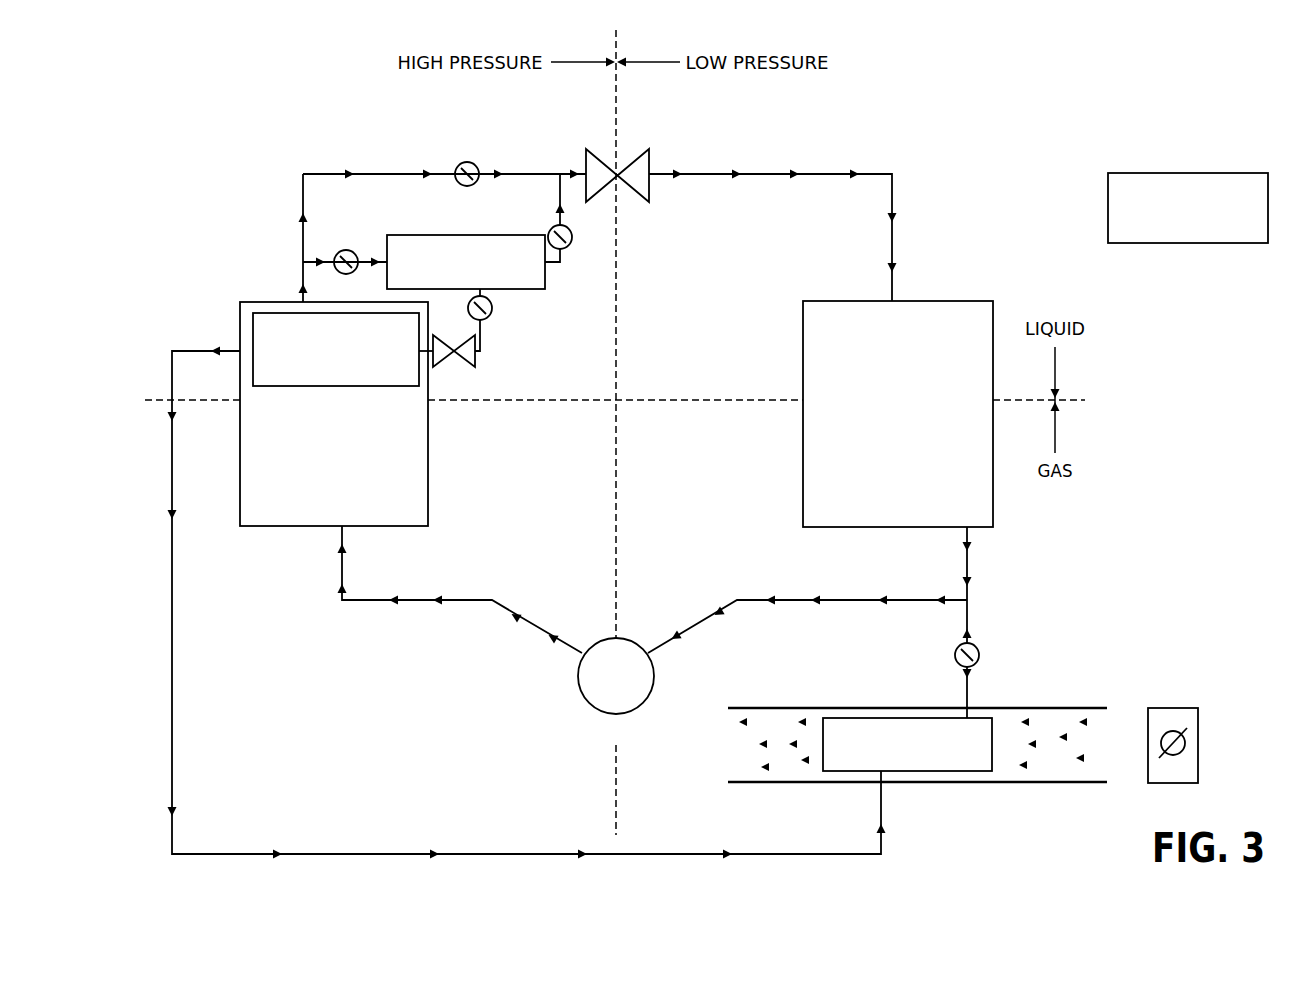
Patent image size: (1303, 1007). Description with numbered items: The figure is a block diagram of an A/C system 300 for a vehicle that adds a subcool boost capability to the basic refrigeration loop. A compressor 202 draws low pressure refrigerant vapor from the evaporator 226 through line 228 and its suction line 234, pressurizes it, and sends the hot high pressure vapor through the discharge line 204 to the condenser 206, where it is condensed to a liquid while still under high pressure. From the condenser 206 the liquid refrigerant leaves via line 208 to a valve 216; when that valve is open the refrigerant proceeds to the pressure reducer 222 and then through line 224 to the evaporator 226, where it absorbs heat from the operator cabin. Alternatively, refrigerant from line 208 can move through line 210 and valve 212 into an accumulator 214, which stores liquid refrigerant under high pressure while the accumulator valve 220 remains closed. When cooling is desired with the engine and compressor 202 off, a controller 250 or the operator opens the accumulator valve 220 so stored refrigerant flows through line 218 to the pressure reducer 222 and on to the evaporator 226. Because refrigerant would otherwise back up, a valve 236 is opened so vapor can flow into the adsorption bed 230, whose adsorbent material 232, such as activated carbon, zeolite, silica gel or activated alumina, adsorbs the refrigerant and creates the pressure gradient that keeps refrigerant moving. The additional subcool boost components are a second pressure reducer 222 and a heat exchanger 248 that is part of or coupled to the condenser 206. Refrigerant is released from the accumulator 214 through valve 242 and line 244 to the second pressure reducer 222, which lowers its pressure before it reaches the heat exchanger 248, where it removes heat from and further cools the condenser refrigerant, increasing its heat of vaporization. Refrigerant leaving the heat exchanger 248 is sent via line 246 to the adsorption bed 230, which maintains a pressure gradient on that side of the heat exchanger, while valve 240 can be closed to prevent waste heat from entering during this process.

The compressor 202 is at (632, 686).
The discharge line 204 is at (462, 603).
The condenser 206 is at (349, 483).
The line 208 is at (303, 233).
The line 210 is at (308, 259).
The valve 212 is at (348, 249).
The accumulator 214 is at (482, 281).
The valve 216 is at (466, 161).
The line 218 is at (551, 267).
The accumulator valve 220 is at (574, 239).
The pressure reducer 222 is at (650, 156).
The line 224 is at (895, 190).
The evaporator 226 is at (913, 445).
The line 228 is at (969, 569).
The adsorption bed 230 is at (922, 784).
The adsorbent material 232 is at (923, 765).
The suction line 234 is at (737, 598).
The valve 236 is at (980, 660).
The valve 240 is at (1163, 707).
The valve 242 is at (492, 308).
The line 244 is at (481, 341).
The line 246 is at (170, 490).
The heat exchanger 248 is at (352, 371).
The controller 250 is at (1204, 226).
The A/C system 300 is at (1042, 105).